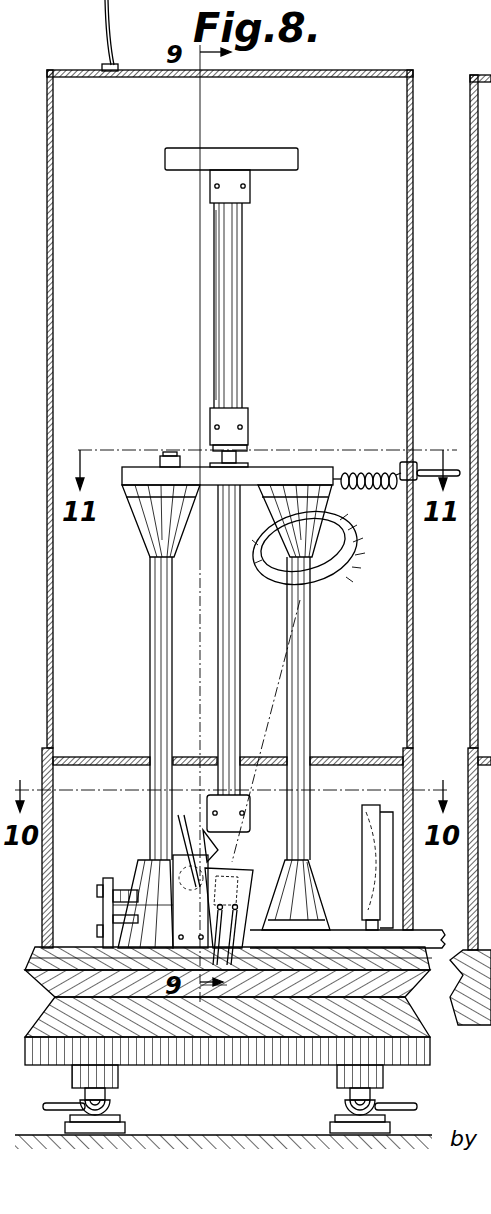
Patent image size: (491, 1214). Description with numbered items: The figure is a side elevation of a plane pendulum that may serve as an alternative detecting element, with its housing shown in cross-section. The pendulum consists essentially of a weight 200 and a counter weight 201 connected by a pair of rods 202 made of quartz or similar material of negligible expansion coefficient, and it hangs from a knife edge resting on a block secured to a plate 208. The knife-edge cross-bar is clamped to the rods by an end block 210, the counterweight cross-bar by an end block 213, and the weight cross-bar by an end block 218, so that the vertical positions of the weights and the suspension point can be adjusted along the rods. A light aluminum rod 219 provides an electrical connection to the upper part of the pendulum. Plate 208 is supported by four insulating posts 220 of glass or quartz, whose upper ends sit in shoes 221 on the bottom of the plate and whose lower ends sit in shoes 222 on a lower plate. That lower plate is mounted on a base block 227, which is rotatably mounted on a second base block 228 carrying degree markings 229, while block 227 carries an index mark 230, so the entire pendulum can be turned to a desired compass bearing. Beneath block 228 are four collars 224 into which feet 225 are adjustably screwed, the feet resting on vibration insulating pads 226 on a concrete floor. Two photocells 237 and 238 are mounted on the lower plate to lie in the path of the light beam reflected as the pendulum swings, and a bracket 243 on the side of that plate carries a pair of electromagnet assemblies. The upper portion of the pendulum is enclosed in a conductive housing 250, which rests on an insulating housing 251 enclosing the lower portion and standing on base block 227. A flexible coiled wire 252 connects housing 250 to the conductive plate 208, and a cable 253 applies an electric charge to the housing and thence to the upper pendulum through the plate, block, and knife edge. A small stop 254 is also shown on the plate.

The weight 200 is at (208, 858).
The counter weight 201 is at (276, 158).
The rod 202 is at (232, 293).
The plate 208 is at (262, 471).
The end block 210 is at (240, 408).
The end block 213 is at (243, 192).
The end block 218 is at (245, 823).
The light aluminum rod 219 is at (215, 322).
The posts 220 is at (158, 633).
The shoes 221 is at (155, 538).
The shoes 222 is at (138, 866).
The collars 224 is at (76, 1078).
The feet 225 is at (112, 1107).
The vibration insulating pads 226 is at (121, 1118).
The base block 227 is at (46, 988).
The second base block 228 is at (213, 1045).
The degree markings 229 is at (383, 1012).
The index mark 230 is at (226, 988).
The photocell 237 is at (243, 895).
The photocell 238 is at (182, 902).
The bracket 243 is at (112, 886).
The conductive housing 250 is at (470, 170).
The insulating housing 251 is at (411, 782).
The flexible coiled wire 252 is at (379, 474).
The cable 253 is at (456, 469).
The stop 254 is at (172, 456).